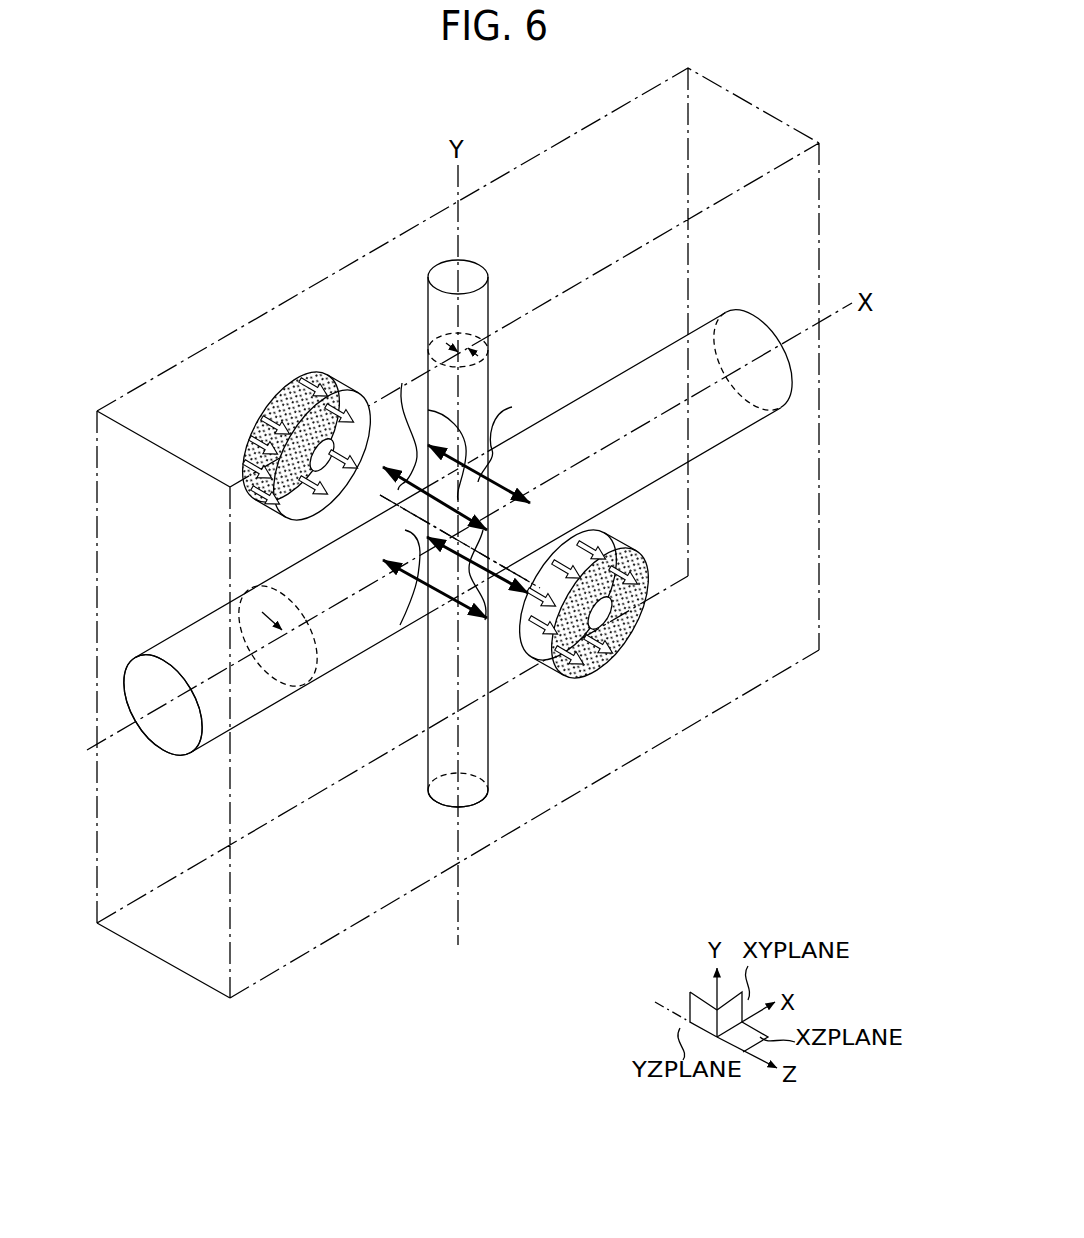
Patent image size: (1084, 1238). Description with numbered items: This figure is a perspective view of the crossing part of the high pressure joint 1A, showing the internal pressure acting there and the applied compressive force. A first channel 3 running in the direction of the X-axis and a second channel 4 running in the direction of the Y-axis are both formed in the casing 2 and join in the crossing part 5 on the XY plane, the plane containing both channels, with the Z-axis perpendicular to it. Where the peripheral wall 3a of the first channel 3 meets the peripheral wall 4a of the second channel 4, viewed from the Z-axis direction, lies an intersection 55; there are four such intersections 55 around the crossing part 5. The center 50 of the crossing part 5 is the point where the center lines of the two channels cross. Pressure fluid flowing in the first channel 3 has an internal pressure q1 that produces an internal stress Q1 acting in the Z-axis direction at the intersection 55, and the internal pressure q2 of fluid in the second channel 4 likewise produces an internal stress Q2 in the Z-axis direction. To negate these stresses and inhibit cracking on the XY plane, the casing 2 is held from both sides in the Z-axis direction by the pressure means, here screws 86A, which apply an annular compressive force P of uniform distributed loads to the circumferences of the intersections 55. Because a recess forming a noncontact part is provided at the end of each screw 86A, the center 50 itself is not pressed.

The high pressure joint 1A is at (250, 181).
The casing 2 is at (343, 310).
The first channel 3 is at (710, 468).
The peripheral wall of the first channel 3a is at (182, 650).
The second channel 4 is at (490, 301).
The peripheral wall of the second channel 4a is at (490, 735).
The crossing part 5 is at (520, 529).
The center of the crossing part 50 is at (393, 558).
The intersection 55 is at (494, 430).
The screw 86A is at (446, 497).
The annular compressive force P is at (652, 655).
The internal pressure of pressure fluid in the first channel q1 is at (255, 612).
The internal pressure of pressure fluid in the second channel q2 is at (430, 352).
The internal stress Q1 is at (474, 487).
The internal stress Q2 is at (400, 490).